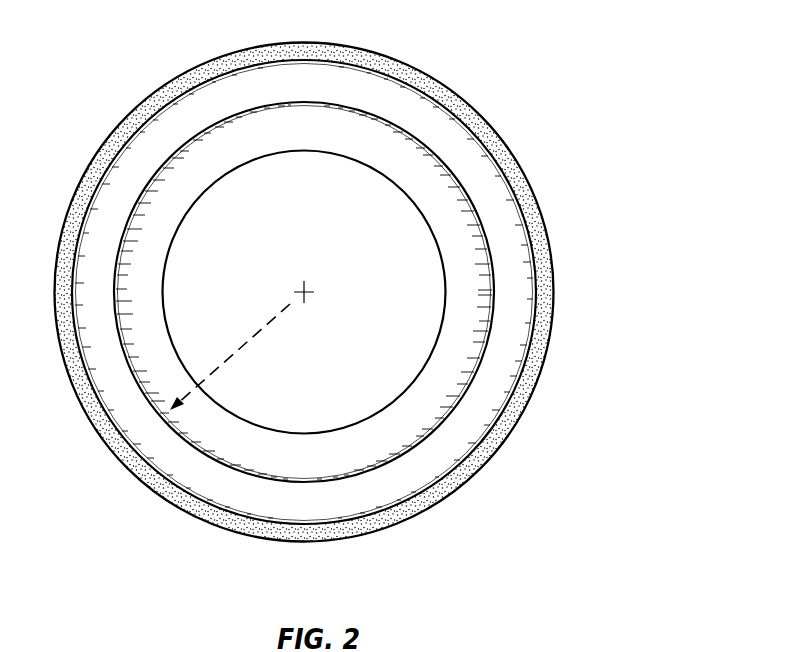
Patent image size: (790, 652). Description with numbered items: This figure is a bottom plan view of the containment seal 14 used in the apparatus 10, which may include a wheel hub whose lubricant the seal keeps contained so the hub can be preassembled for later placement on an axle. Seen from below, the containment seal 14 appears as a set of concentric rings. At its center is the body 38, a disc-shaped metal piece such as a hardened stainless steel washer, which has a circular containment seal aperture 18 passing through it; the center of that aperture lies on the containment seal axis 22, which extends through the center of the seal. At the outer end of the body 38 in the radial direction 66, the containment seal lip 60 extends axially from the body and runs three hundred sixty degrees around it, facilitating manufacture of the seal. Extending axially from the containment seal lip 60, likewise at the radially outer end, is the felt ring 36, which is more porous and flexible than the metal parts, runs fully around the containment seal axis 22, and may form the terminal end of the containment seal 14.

The apparatus 10 is at (613, 58).
The containment seal 14 is at (513, 218).
The containment seal aperture 18 is at (234, 255).
The containment seal axis 22 is at (306, 286).
The felt ring 36 is at (488, 450).
The body 38 is at (400, 177).
The containment seal lip 60 is at (360, 495).
The radial direction 66 is at (231, 361).